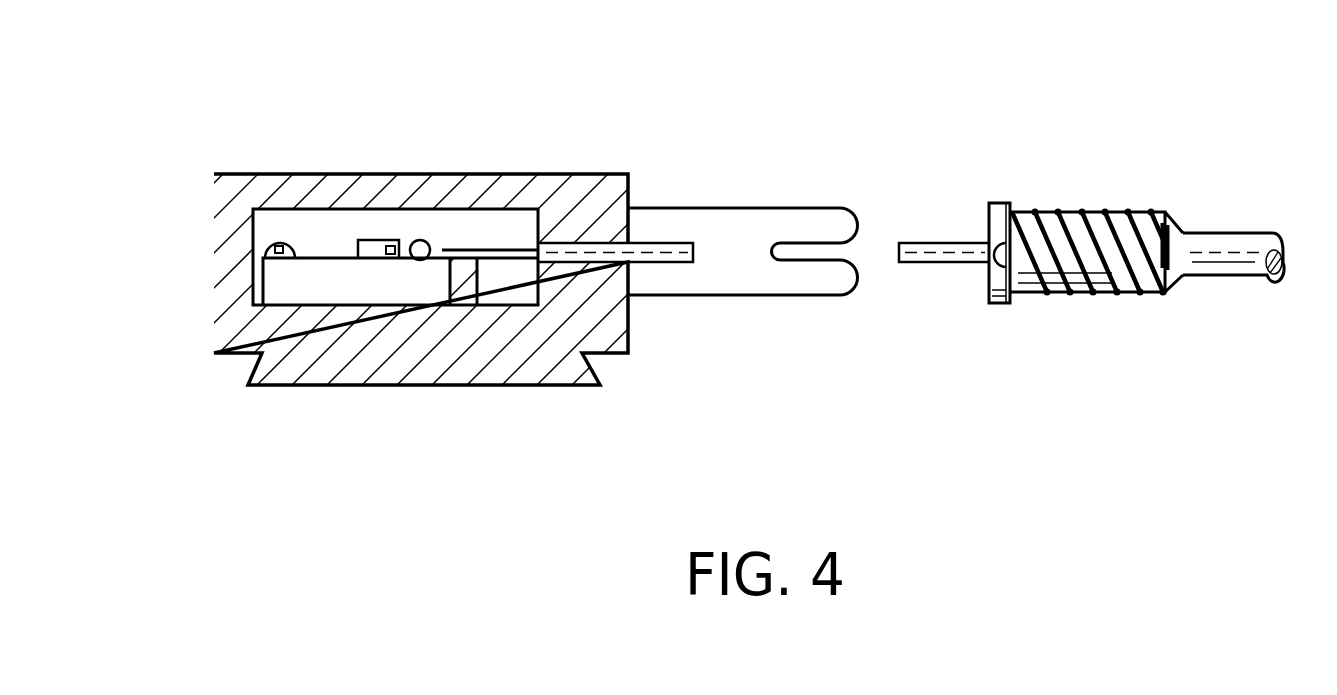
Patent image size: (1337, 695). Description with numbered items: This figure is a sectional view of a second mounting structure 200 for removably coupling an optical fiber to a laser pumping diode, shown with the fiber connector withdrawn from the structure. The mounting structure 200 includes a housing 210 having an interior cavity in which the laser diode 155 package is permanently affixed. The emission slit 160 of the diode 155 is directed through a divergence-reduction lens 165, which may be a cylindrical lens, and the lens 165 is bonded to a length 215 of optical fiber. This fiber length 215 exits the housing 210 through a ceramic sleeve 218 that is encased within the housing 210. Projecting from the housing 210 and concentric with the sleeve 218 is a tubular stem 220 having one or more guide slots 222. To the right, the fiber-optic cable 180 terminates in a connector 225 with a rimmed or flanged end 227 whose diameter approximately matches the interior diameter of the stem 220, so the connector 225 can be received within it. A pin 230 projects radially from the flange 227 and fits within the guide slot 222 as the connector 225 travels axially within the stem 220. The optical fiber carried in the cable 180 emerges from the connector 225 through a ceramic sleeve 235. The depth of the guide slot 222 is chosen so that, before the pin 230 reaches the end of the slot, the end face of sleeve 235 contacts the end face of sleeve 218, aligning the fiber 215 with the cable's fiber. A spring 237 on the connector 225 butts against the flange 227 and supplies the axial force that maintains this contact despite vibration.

The mounting structure 200 is at (367, 98).
The housing 210 is at (214, 216).
The laser diode 155 is at (275, 283).
The emission slit 160 is at (383, 247).
The divergence-reduction lens 165 is at (423, 240).
The length of optical fiber 215 is at (514, 238).
The ceramic sleeve 218 is at (652, 242).
The tubular stem 220 is at (757, 208).
The guide slot 222 is at (802, 252).
The ceramic sleeve 235 is at (930, 242).
The flanged end 227 is at (1002, 203).
The pin 230 is at (1003, 303).
The connector 225 is at (1096, 241).
The spring 237 is at (1090, 293).
The fiber-optic cable 180 is at (1237, 199).